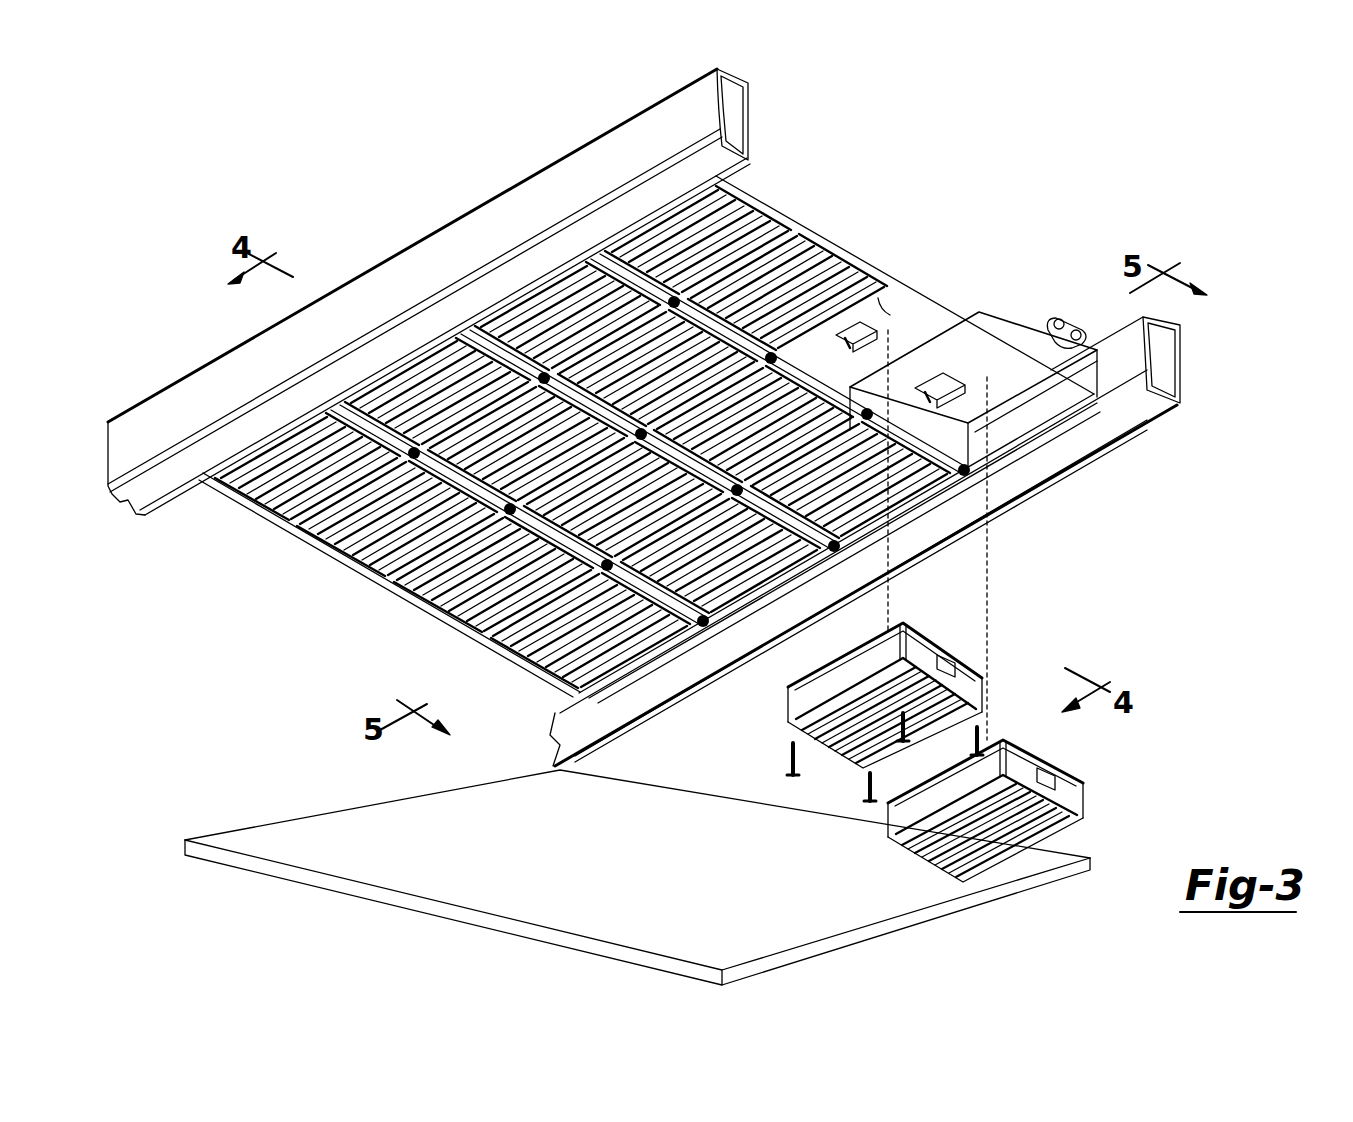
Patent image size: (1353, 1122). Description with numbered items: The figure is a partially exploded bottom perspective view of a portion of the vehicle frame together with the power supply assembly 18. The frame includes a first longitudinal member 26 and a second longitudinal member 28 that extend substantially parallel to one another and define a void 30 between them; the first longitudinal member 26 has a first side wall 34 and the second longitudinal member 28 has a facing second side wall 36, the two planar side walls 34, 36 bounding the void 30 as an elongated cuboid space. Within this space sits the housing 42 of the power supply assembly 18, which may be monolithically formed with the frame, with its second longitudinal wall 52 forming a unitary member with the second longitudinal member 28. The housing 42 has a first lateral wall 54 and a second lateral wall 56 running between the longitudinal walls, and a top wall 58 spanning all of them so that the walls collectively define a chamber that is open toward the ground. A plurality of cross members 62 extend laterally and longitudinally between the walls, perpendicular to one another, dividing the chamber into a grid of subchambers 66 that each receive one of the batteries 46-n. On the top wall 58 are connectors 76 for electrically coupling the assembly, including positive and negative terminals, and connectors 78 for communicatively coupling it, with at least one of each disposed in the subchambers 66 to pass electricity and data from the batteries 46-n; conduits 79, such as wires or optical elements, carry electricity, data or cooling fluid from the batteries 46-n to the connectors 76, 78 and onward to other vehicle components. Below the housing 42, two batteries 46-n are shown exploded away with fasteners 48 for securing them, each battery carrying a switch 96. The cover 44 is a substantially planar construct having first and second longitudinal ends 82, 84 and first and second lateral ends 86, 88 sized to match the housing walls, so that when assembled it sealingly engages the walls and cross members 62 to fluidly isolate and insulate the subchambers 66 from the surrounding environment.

The power supply assembly 18 is at (705, 552).
The first longitudinal member 26 is at (556, 292).
The second longitudinal member 28 is at (903, 538).
The void 30 is at (705, 557).
The first side wall 34 is at (741, 112).
The second side wall 36 is at (1183, 350).
The housing 42 is at (932, 262).
The cover 44 is at (678, 842).
The batteries 46-n is at (700, 567).
The fasteners 48 is at (793, 778).
The second longitudinal wall 52 is at (1050, 410).
The first lateral wall 54 is at (765, 178).
The second lateral wall 56 is at (267, 522).
The top wall 58 is at (1007, 390).
The cross members 62 is at (967, 470).
The subchambers 66 is at (900, 300).
The connectors 76 is at (968, 410).
The connectors 78 is at (875, 340).
The conduits 79 is at (1080, 332).
The first longitudinal end 82 is at (457, 913).
The second longitudinal end 84 is at (750, 800).
The first lateral end 86 is at (1090, 870).
The second lateral end 88 is at (233, 830).
The switch 96 is at (985, 668).